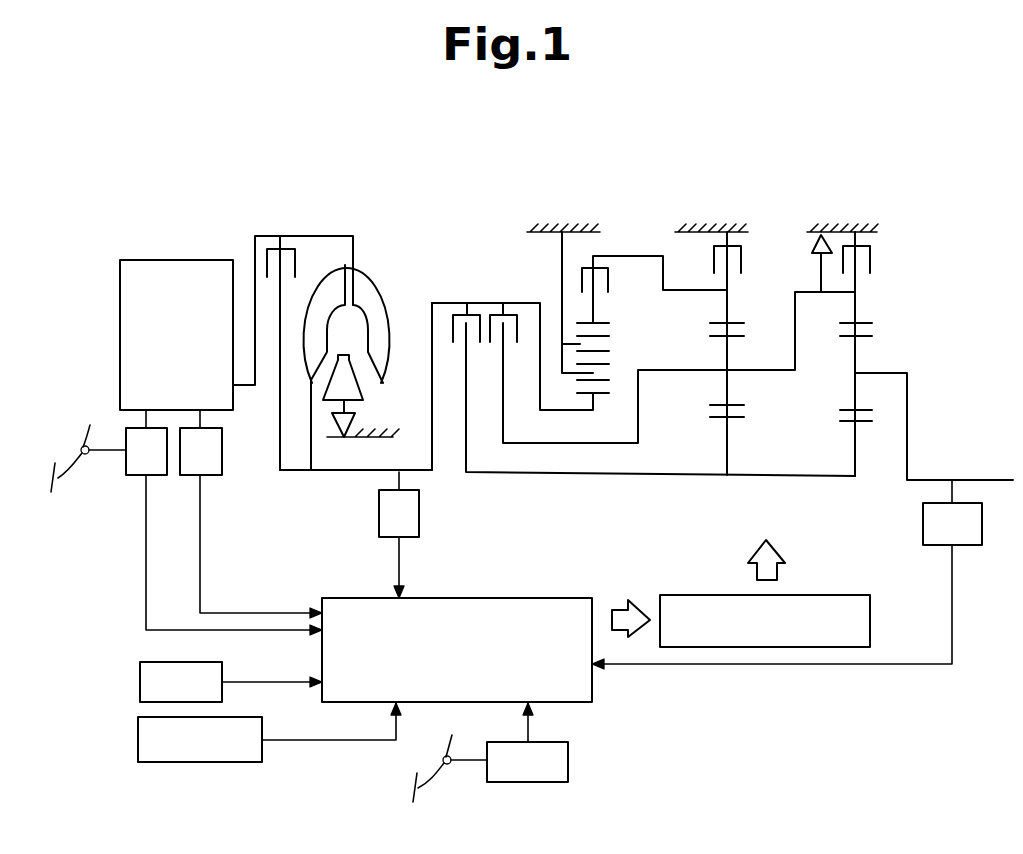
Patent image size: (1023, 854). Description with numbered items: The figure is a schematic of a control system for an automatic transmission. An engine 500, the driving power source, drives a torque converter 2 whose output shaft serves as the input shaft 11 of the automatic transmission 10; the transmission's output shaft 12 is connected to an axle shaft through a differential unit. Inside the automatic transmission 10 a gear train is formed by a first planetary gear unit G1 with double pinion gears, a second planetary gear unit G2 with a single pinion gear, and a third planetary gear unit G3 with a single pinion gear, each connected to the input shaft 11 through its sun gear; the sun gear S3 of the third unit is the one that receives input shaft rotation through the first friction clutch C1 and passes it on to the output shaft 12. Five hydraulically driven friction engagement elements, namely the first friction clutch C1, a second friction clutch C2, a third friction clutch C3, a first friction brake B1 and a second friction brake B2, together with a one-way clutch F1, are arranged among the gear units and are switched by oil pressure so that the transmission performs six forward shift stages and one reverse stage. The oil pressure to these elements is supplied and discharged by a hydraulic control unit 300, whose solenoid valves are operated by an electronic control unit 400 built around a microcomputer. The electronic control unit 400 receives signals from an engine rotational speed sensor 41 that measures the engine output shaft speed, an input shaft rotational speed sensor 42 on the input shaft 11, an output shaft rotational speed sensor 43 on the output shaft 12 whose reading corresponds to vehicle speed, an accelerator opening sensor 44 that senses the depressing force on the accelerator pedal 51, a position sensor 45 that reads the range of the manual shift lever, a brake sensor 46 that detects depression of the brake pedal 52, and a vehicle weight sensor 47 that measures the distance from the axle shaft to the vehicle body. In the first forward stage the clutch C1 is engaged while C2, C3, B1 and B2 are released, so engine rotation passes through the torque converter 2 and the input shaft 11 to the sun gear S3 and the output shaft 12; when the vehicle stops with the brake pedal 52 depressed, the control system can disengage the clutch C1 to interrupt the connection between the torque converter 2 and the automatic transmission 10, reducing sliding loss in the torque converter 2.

The torque converter 2 is at (384, 246).
The automatic transmission 10 is at (481, 208).
The input shaft 11 is at (421, 472).
The output shaft 12 is at (982, 478).
The engine 500 is at (176, 335).
The electronic control unit 400 is at (457, 650).
The hydraulic control unit 300 is at (765, 621).
The engine rotational speed sensor 41 is at (251, 514).
The input shaft rotational speed sensor 42 is at (399, 535).
The output shaft rotational speed sensor 43 is at (787, 574).
The accelerator opening sensor 44 is at (224, 522).
The position sensor 45 is at (231, 682).
The brake sensor 46 is at (527, 742).
The vehicle weight sensor 47 is at (269, 732).
The accelerator pedal 51 is at (88, 489).
The brake pedal 52 is at (455, 793).
The first friction clutch C1 is at (474, 339).
The second friction clutch C2 is at (672, 367).
The third friction clutch C3 is at (652, 324).
The first friction brake B1 is at (734, 353).
The second friction brake B2 is at (864, 354).
The one-way clutch F1 is at (807, 263).
The sun gear S3 is at (853, 450).
The first planetary gear unit G1 is at (613, 231).
The second planetary gear unit G2 is at (762, 238).
The third planetary gear unit G3 is at (894, 237).